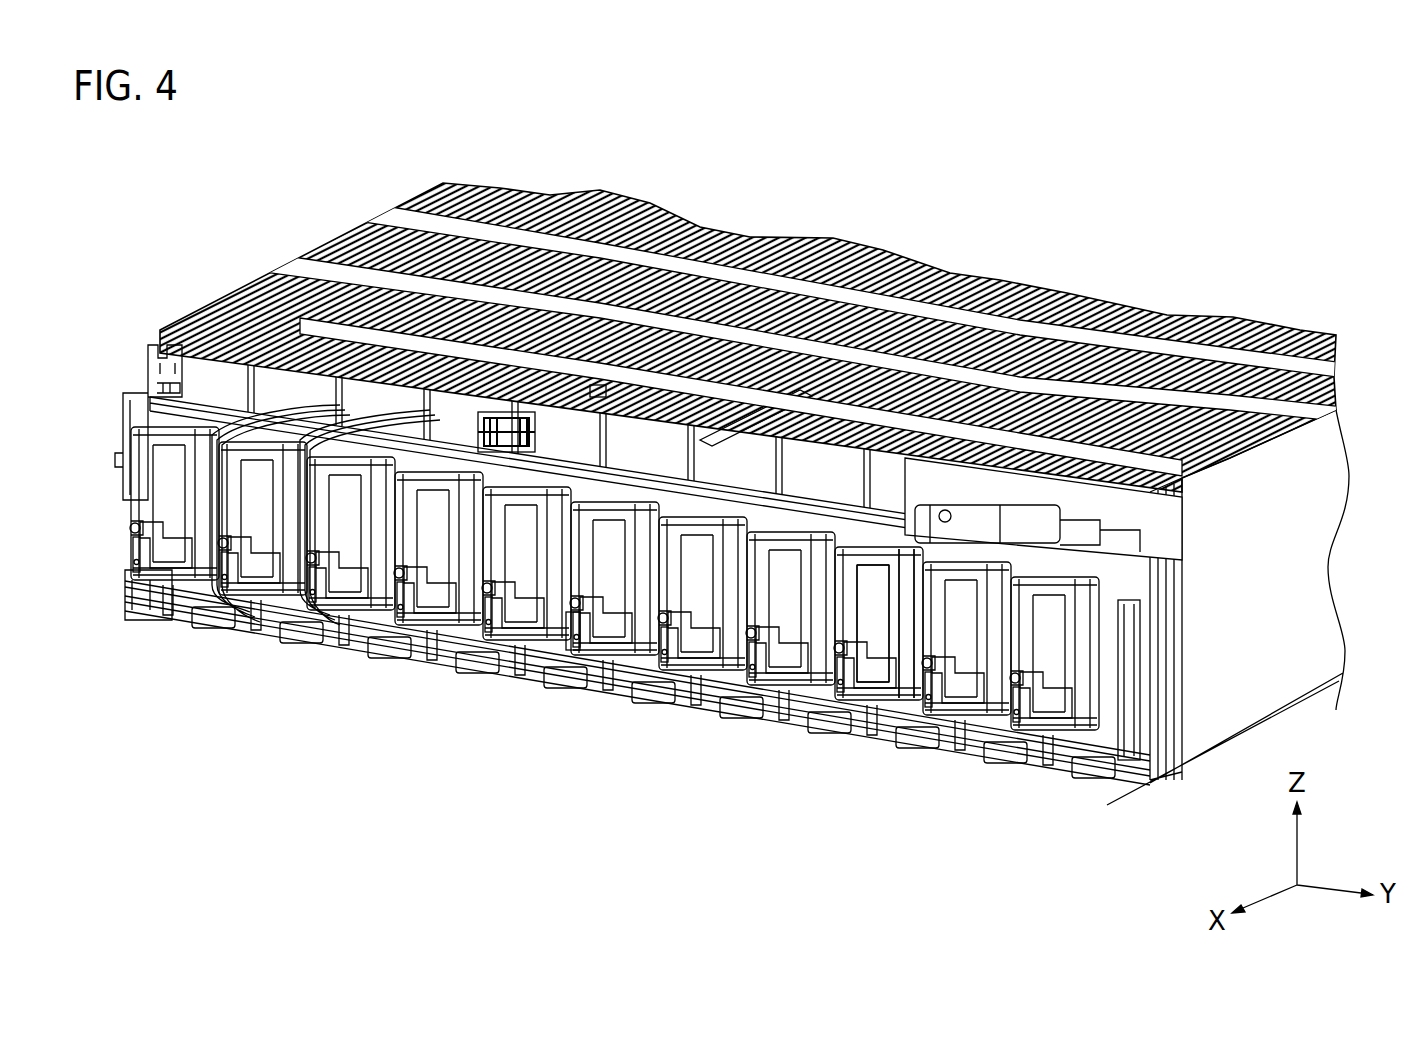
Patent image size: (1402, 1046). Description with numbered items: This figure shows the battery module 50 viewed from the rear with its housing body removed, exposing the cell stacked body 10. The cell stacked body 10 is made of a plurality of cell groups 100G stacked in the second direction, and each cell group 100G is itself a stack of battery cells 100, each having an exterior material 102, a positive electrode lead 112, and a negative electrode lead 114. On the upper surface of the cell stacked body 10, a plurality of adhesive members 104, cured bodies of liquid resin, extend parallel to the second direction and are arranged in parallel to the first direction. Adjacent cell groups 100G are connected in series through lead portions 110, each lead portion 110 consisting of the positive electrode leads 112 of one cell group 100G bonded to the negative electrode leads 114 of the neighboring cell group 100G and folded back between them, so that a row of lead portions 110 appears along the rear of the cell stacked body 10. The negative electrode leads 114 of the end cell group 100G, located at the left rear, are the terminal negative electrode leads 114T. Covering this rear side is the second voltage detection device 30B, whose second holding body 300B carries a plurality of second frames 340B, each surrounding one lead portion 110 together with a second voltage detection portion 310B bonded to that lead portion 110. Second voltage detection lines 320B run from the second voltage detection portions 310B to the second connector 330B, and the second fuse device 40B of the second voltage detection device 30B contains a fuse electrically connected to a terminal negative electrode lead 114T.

The cell stacked body 10 is at (322, 214).
The second voltage detection device 30B is at (158, 324).
The second holding body 300B is at (190, 405).
The second connector 330B is at (515, 415).
The exterior material 102 is at (598, 386).
The second frame 340B is at (693, 500).
The cell group 100G is at (846, 290).
The battery cell 100 is at (756, 418).
The battery module 50 is at (1217, 144).
The adhesive member 104 is at (982, 365).
The second fuse device 40B is at (1022, 497).
The second voltage detection line 320B is at (572, 640).
The second voltage detection portion 310B is at (611, 652).
The positive electrode lead 112 is at (875, 623).
The negative electrode lead 114 is at (890, 635).
The lead portion 110 is at (965, 832).
The terminal negative electrode lead 114T is at (1130, 660).